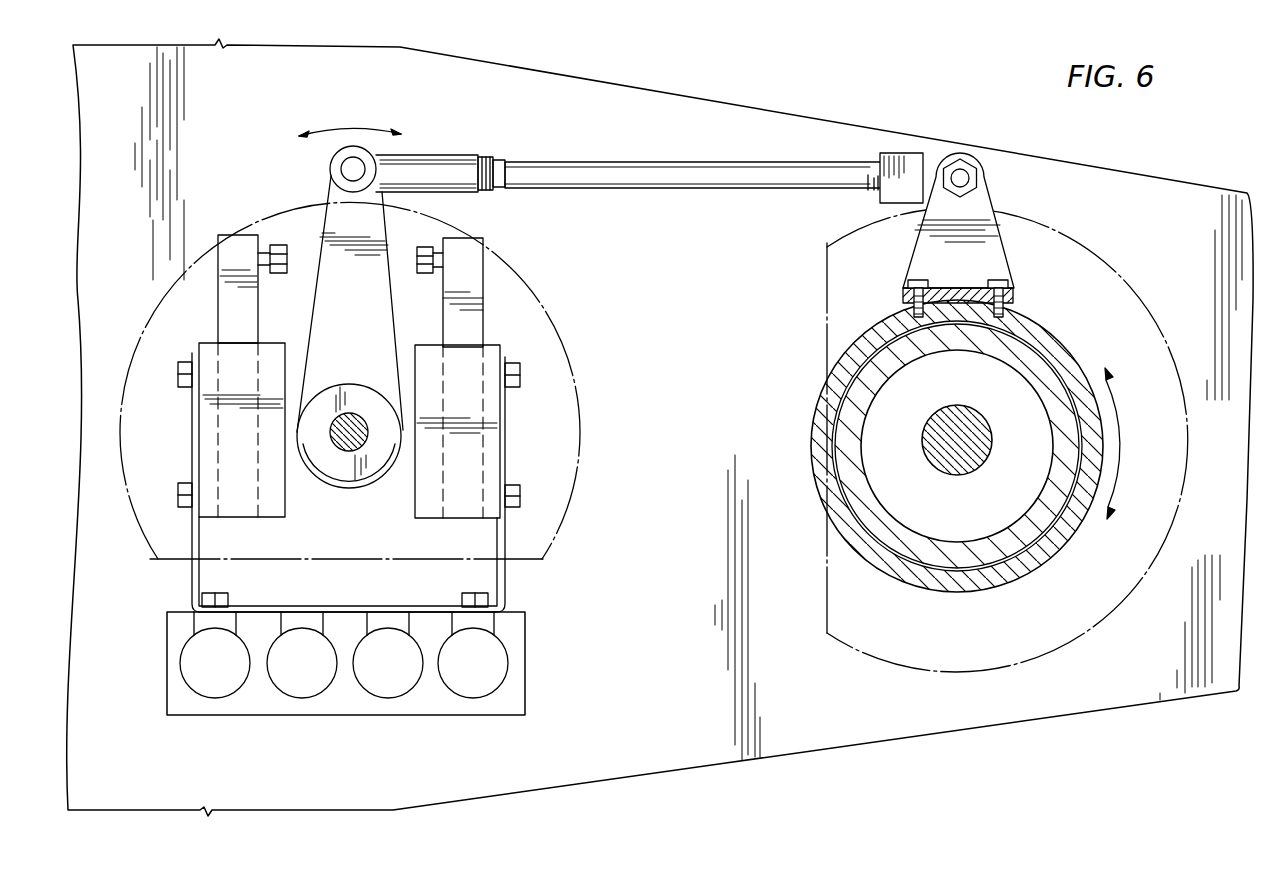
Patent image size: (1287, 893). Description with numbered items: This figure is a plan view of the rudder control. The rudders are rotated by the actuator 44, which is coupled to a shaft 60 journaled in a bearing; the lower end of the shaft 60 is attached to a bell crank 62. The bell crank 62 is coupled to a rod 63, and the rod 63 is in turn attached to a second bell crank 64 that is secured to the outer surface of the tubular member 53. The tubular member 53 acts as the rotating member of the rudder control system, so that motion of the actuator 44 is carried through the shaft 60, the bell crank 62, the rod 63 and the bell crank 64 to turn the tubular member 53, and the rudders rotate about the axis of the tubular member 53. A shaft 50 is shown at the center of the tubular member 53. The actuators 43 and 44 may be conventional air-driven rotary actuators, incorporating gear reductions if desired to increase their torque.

The actuator 43 is at (830, 298).
The actuator 44 is at (580, 389).
The shaft 50 is at (993, 437).
The tubular member 53 is at (1043, 360).
The shaft 60 is at (339, 451).
The bell crank 62 is at (332, 217).
The rod 63 is at (678, 181).
The bell crank 64 is at (988, 196).